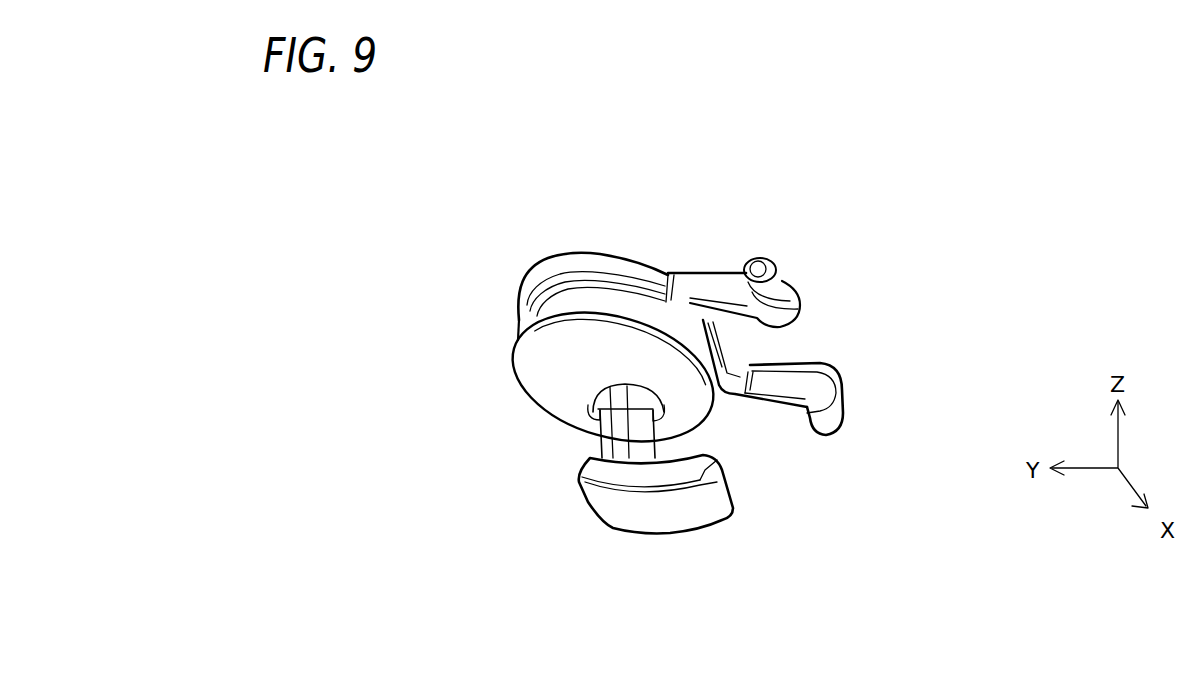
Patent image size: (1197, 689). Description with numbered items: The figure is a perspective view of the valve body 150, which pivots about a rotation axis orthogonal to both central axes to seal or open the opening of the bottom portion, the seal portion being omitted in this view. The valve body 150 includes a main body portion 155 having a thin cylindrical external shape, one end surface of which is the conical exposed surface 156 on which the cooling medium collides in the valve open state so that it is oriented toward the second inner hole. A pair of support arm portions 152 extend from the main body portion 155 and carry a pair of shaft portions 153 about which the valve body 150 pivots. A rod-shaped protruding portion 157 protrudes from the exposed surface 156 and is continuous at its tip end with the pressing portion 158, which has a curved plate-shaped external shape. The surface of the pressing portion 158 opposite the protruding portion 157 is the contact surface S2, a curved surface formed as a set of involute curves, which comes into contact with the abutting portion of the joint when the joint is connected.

The valve body 150 is at (914, 180).
The support arm portions 152 is at (713, 287).
The shaft portions 153 is at (843, 418).
The main body portion 155 is at (498, 281).
The exposed surface 156 is at (538, 358).
The protruding portion 157 is at (609, 437).
The pressing portion 158 is at (700, 527).
The contact surface S2 is at (628, 503).